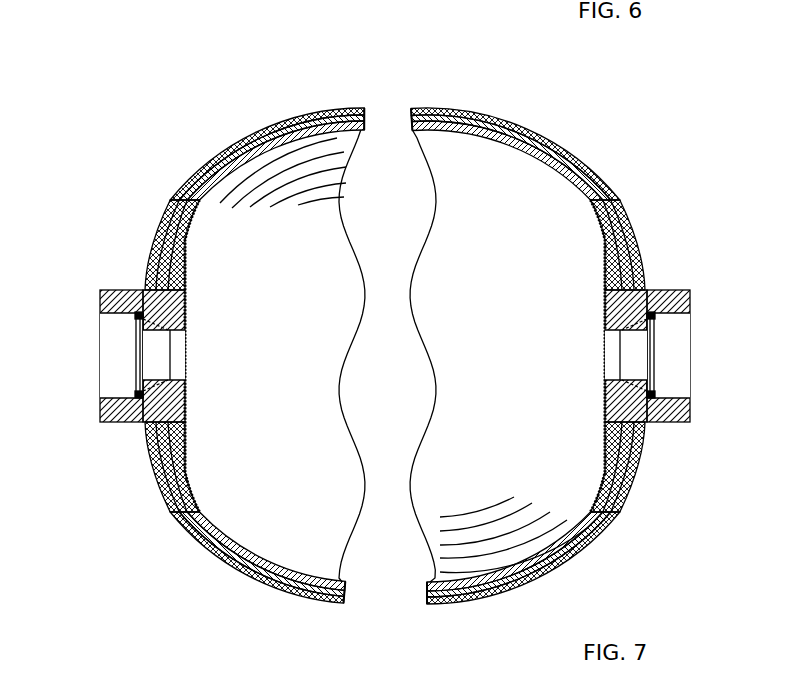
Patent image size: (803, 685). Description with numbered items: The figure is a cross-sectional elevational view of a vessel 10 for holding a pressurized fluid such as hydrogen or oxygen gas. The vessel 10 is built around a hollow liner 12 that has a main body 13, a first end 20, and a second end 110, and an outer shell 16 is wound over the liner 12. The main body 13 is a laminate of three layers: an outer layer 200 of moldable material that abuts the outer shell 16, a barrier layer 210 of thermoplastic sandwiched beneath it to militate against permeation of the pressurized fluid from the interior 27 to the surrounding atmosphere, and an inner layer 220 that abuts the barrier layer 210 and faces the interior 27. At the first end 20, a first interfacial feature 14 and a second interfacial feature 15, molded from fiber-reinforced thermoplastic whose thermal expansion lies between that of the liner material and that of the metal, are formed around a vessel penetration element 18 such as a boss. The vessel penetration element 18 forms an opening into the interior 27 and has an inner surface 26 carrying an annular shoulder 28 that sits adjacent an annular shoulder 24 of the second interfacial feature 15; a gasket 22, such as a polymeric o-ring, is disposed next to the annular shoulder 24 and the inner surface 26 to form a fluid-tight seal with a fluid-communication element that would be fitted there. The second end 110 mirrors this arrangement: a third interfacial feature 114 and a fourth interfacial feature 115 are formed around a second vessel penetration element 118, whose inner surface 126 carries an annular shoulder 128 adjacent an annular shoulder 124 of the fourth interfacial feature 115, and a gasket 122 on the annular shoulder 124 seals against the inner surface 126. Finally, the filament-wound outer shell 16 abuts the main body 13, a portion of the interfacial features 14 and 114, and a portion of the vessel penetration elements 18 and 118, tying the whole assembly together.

The vessel 10 is at (127, 74).
The hollow liner 12 is at (212, 162).
The main body 13 is at (303, 108).
The first interfacial feature 14 is at (162, 242).
The second interfacial feature 15 is at (186, 250).
The outer shell 16 is at (258, 140).
The vessel penetration element 18 is at (100, 290).
The first end 20 is at (229, 573).
The gasket 22 is at (148, 330).
The annular shoulder 24 is at (137, 356).
The inner surface 26 is at (135, 316).
The interior 27 is at (311, 374).
The annular shoulder 28 is at (140, 312).
The second end 110 is at (553, 579).
The third interfacial feature 114 is at (628, 246).
The fourth interfacial feature 115 is at (604, 248).
The vessel penetration element 118 is at (690, 290).
The gasket 122 is at (642, 330).
The annular shoulder 124 is at (653, 356).
The inner surface 126 is at (655, 316).
The annular shoulder 128 is at (650, 312).
The outer layer 200 is at (366, 119).
The barrier layer 210 is at (366, 122).
The inner layer 220 is at (313, 146).